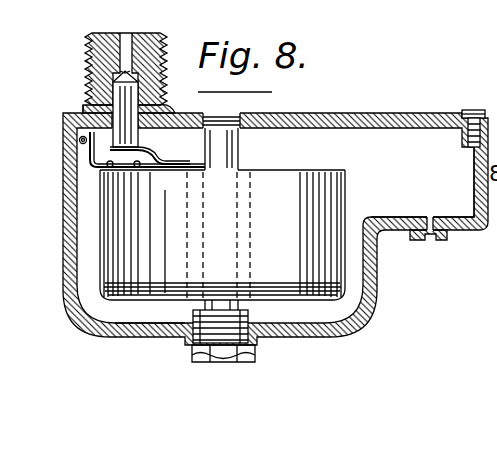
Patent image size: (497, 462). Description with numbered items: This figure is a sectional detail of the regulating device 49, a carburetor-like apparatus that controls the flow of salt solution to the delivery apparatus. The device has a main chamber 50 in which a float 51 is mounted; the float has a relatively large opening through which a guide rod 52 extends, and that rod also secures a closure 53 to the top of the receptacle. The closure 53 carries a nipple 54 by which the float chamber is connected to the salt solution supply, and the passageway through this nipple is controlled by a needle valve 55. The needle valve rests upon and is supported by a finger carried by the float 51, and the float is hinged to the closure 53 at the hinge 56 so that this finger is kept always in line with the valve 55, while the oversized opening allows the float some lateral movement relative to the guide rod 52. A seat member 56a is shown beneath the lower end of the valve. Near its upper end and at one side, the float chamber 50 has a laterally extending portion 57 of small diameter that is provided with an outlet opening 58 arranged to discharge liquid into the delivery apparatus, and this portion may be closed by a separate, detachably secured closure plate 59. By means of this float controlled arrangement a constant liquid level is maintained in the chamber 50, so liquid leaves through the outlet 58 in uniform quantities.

The regulating device 49 is at (377, 258).
The main chamber 50 is at (185, 330).
The float 51 is at (222, 235).
The guide rod 52 is at (222, 154).
The closure 53 is at (170, 121).
The nipple 54 is at (138, 53).
The needle valve 55 is at (125, 100).
The hinge 56 is at (79, 139).
The valve seat 56a is at (147, 151).
The laterally extending portion 57 is at (422, 182).
The outlet opening 58 is at (427, 238).
The closure plate 59 is at (425, 130).